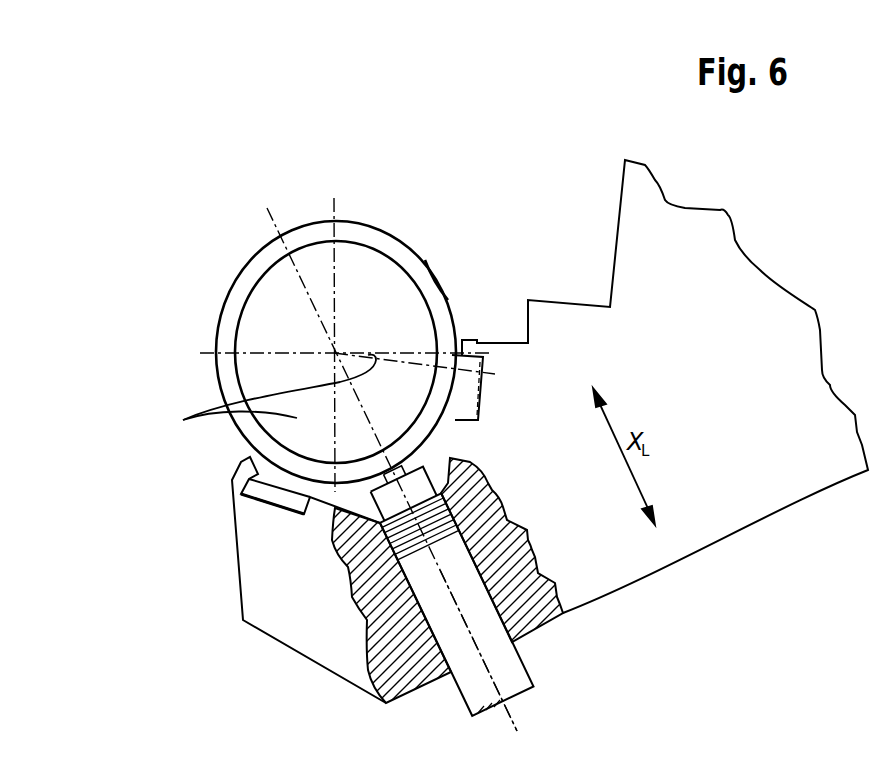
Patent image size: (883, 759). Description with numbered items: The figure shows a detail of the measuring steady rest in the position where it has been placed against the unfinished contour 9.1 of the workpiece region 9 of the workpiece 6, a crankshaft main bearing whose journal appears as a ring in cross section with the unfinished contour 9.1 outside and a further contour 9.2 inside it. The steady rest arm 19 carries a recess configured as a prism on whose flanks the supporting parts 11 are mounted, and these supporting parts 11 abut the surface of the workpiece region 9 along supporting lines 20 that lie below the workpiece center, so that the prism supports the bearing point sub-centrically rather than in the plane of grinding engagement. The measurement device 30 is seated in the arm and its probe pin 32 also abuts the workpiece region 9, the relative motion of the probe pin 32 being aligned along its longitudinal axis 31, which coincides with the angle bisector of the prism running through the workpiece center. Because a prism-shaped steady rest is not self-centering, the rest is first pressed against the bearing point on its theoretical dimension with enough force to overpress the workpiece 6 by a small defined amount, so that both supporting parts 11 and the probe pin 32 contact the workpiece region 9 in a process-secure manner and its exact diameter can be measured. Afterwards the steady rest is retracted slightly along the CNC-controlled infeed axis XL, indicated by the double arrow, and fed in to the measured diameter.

The workpiece 6 is at (353, 277).
The workpiece region 9 is at (402, 243).
The unfinished contour 9.1 is at (425, 260).
The inner ring surface 9.2 is at (430, 302).
The supporting parts 11 is at (462, 395).
The steady rest arm 19 is at (257, 577).
The supporting lines 20 is at (265, 397).
The measurement device 30 is at (507, 658).
The longitudinal axis 31 is at (517, 722).
The probe pin 32 is at (465, 455).